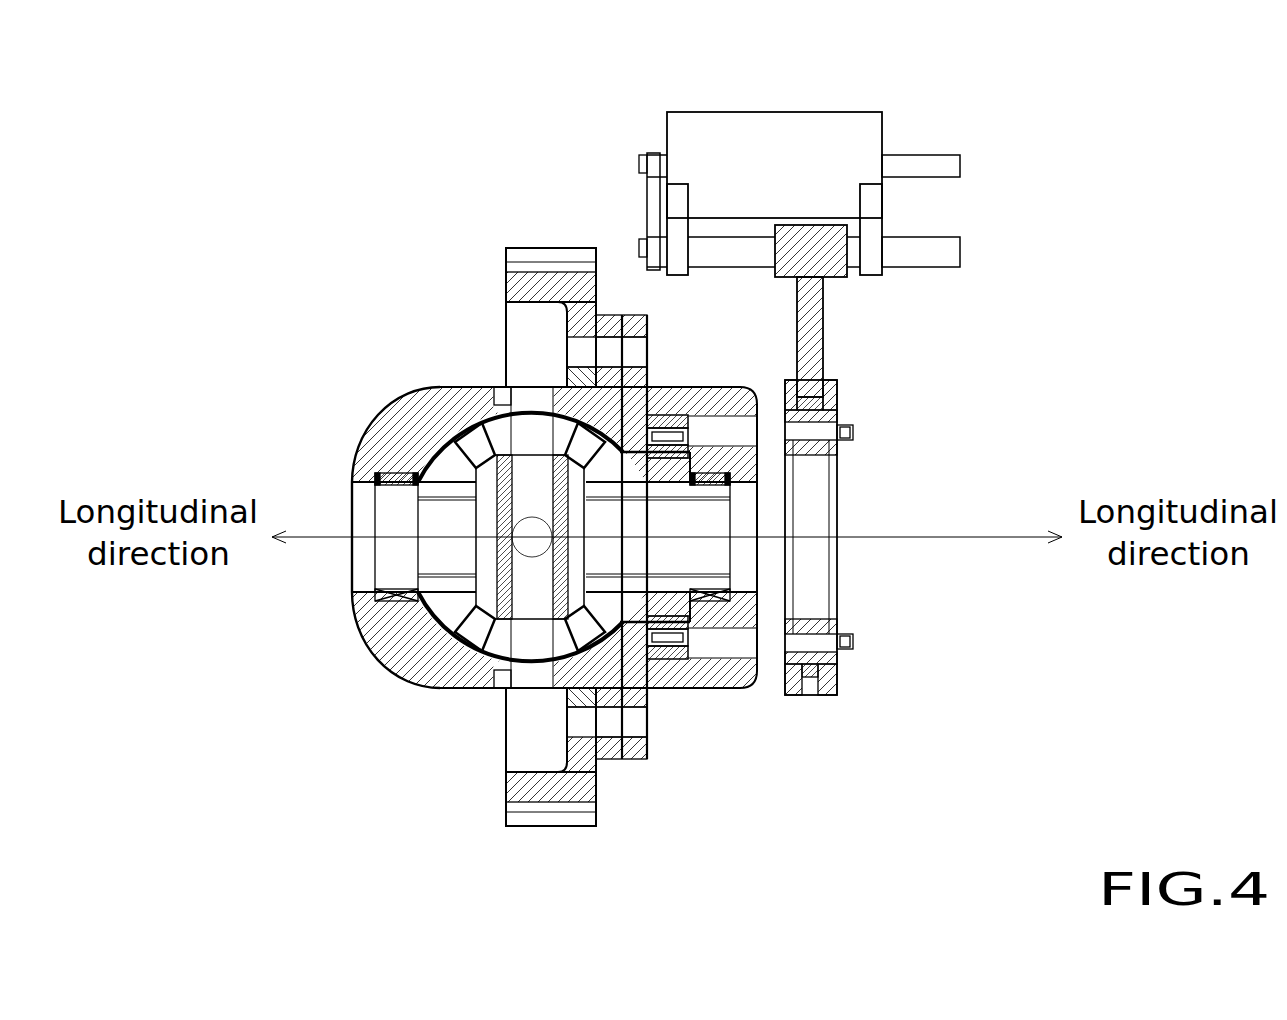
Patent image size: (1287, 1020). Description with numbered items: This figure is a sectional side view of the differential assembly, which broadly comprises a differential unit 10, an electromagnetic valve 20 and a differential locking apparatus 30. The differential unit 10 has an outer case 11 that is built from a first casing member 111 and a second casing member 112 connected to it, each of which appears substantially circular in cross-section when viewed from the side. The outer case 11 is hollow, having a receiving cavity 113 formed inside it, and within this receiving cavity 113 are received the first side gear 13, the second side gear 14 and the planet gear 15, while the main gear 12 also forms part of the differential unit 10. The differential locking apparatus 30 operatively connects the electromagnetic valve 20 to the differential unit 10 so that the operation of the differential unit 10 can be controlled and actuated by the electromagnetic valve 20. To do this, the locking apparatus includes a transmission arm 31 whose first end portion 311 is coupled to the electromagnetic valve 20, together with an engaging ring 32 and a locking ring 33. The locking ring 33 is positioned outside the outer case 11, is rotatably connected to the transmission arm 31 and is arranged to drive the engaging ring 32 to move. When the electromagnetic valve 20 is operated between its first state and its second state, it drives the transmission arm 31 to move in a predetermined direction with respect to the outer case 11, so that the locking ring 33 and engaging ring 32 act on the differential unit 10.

The differential unit 10 is at (497, 544).
The outer case 11 is at (356, 652).
The second casing member 112 is at (400, 662).
The first casing member 111 is at (728, 673).
The main gear 12 is at (517, 287).
The receiving cavity 113 is at (612, 654).
The first side gear 13 is at (715, 568).
The second side gear 14 is at (392, 568).
The planet gear 15 is at (483, 667).
The electromagnetic valve 20 is at (799, 92).
The differential locking apparatus 30 is at (940, 441).
The transmission arm 31 is at (813, 323).
The first end portion 311 is at (808, 293).
The engaging ring 32 is at (663, 425).
The locking ring 33 is at (840, 413).